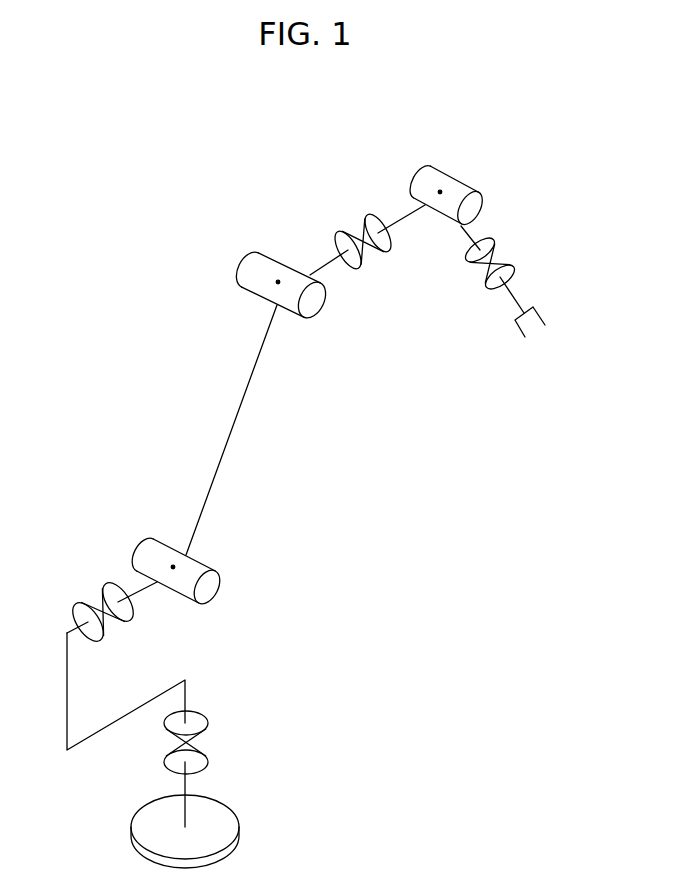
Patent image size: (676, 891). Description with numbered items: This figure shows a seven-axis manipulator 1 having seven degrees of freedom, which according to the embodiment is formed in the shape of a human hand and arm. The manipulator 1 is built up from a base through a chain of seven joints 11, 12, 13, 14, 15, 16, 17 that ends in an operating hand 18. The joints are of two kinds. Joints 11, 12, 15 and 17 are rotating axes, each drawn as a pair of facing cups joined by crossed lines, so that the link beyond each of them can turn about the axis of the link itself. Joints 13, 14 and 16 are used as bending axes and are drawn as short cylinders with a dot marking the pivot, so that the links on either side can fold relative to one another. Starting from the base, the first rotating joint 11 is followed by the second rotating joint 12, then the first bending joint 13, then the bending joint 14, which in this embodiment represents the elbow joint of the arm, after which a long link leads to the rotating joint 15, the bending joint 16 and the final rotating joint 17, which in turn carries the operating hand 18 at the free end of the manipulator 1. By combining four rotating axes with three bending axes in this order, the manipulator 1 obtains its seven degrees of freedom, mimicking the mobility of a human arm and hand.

The manipulator 1 is at (221, 822).
The joint 11 is at (200, 717).
The joint 12 is at (84, 618).
The joint 13 is at (207, 557).
The elbow joint 14 is at (290, 320).
The joint 15 is at (356, 268).
The joint 16 is at (446, 171).
The joint 17 is at (494, 238).
The operating hand 18 is at (540, 306).